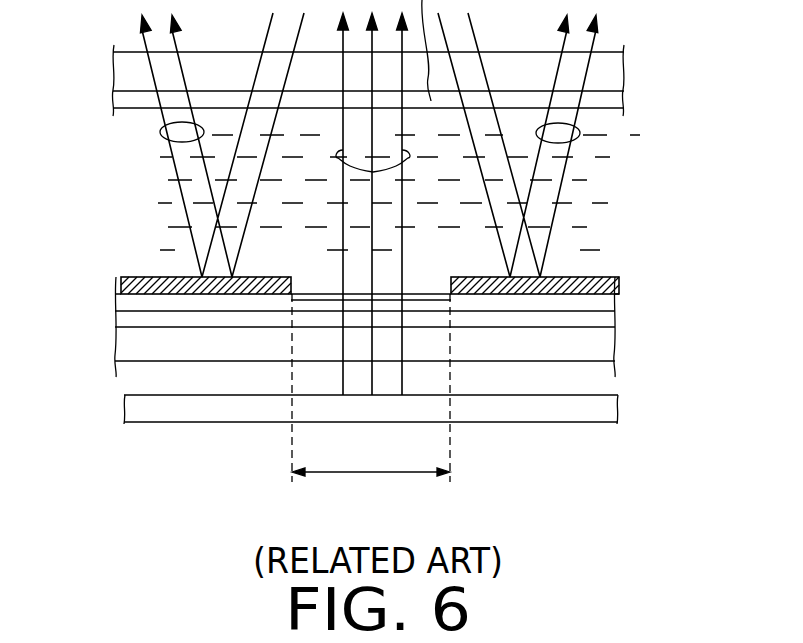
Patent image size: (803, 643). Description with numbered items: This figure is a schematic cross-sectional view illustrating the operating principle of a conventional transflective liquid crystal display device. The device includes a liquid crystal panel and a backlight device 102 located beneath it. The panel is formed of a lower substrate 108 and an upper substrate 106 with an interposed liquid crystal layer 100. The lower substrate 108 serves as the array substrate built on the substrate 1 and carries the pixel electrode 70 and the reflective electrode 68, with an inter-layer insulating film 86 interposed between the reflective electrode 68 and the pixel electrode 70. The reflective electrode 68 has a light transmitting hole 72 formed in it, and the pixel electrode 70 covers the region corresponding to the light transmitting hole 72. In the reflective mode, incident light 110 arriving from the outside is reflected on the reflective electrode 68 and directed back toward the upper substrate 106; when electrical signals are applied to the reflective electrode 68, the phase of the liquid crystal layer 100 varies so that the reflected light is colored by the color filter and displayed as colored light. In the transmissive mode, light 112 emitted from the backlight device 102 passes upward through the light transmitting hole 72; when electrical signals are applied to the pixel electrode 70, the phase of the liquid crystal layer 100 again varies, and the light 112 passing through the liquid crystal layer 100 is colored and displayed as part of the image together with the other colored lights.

The substrate 1 is at (435, 356).
The reflective electrode 68 is at (121, 283).
The pixel electrode 70 is at (122, 320).
The light transmitting hole 72 is at (371, 388).
The inter-layer insulating film 86 is at (352, 303).
The liquid crystal layer 100 is at (640, 128).
The backlight device 102 is at (523, 407).
The upper substrate 106 is at (640, 43).
The lower substrate 108 is at (640, 268).
The incident light 110 is at (160, 133).
The light emitted from the backlight device 112 is at (408, 158).